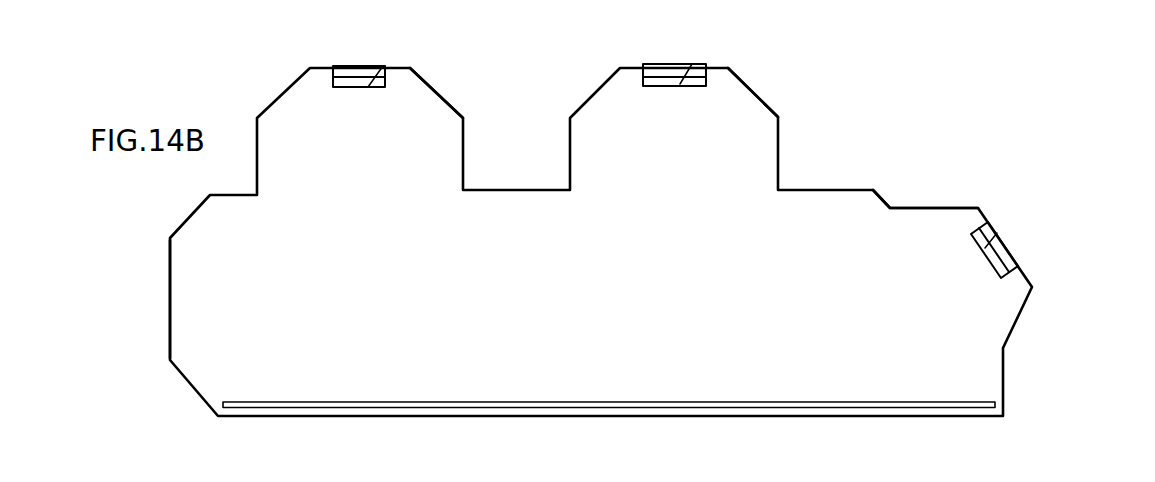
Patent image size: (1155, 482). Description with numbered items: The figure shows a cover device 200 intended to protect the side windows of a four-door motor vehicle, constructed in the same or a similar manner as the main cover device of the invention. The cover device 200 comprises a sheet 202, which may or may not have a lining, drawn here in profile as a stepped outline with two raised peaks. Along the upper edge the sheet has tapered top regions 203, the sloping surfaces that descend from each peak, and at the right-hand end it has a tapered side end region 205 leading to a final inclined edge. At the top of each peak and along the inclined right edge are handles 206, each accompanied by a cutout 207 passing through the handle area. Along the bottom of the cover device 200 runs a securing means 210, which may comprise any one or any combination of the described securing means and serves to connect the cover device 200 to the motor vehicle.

The cover device 200 is at (178, 395).
The sheet 202 is at (170, 295).
The tapered top region 203 is at (440, 95).
The tapered side end region 205 is at (927, 207).
The handle 206 is at (357, 70).
The cutout 207 is at (383, 66).
The securing means 210 is at (395, 404).